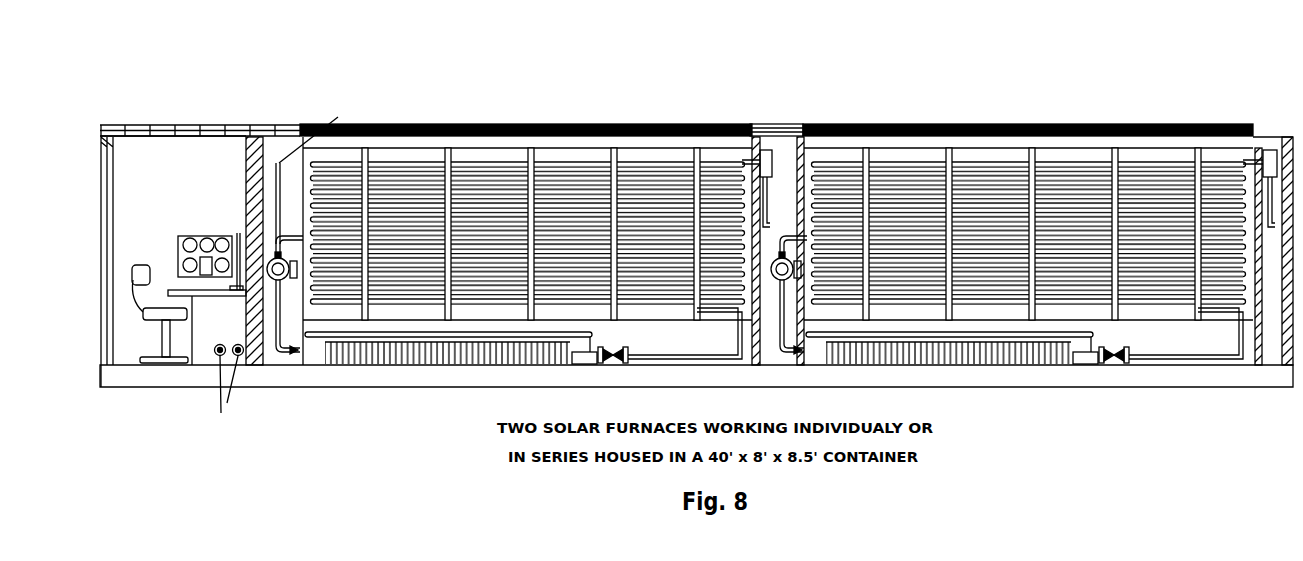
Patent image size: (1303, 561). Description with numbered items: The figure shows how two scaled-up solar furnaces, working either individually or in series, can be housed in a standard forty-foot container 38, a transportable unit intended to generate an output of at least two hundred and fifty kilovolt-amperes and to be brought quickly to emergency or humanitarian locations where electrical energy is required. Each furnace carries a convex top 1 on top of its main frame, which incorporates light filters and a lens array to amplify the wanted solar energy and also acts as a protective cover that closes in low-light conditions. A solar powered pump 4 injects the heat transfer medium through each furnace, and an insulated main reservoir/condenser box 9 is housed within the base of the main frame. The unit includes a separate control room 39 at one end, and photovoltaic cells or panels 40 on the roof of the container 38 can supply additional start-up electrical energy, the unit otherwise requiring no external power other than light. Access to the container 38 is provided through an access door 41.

The convex top 1 is at (527, 127).
The solar powered pump 4 is at (1277, 153).
The main reservoir/condenser box 9 is at (950, 352).
The container 38 is at (382, 388).
The control room 39 is at (162, 166).
The photovoltaic cells or panels 40 is at (226, 127).
The access door 41 is at (102, 327).